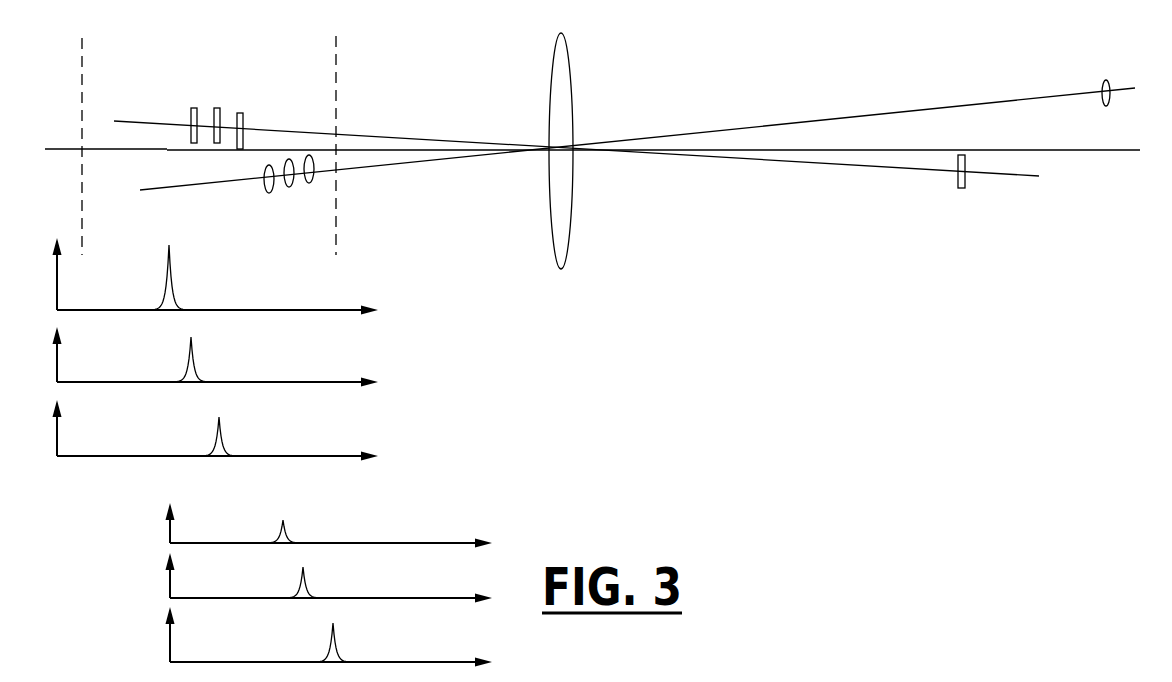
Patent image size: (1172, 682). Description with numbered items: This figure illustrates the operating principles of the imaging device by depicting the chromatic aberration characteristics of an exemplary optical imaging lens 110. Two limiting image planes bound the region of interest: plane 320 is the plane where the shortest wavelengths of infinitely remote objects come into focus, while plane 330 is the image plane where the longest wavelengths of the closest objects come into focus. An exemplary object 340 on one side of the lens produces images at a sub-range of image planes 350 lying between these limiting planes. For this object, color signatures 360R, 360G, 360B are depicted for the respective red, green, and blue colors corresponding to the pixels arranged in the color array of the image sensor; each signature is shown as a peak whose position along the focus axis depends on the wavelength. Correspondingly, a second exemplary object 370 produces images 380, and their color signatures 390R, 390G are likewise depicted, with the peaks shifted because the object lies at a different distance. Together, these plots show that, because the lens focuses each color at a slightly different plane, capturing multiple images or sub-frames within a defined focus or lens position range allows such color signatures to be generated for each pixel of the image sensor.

The optical imaging lens 110 is at (562, 166).
The plane 320 is at (338, 135).
The plane 330 is at (83, 134).
The object 340 is at (960, 186).
The image planes 350 is at (217, 114).
The object 370 is at (1108, 81).
The images 380 is at (289, 185).
The color signature 360R is at (153, 277).
The color signature 360G is at (208, 352).
The color signature 360B is at (289, 530).
The color signature 390R is at (267, 521).
The color signature 390G is at (319, 576).